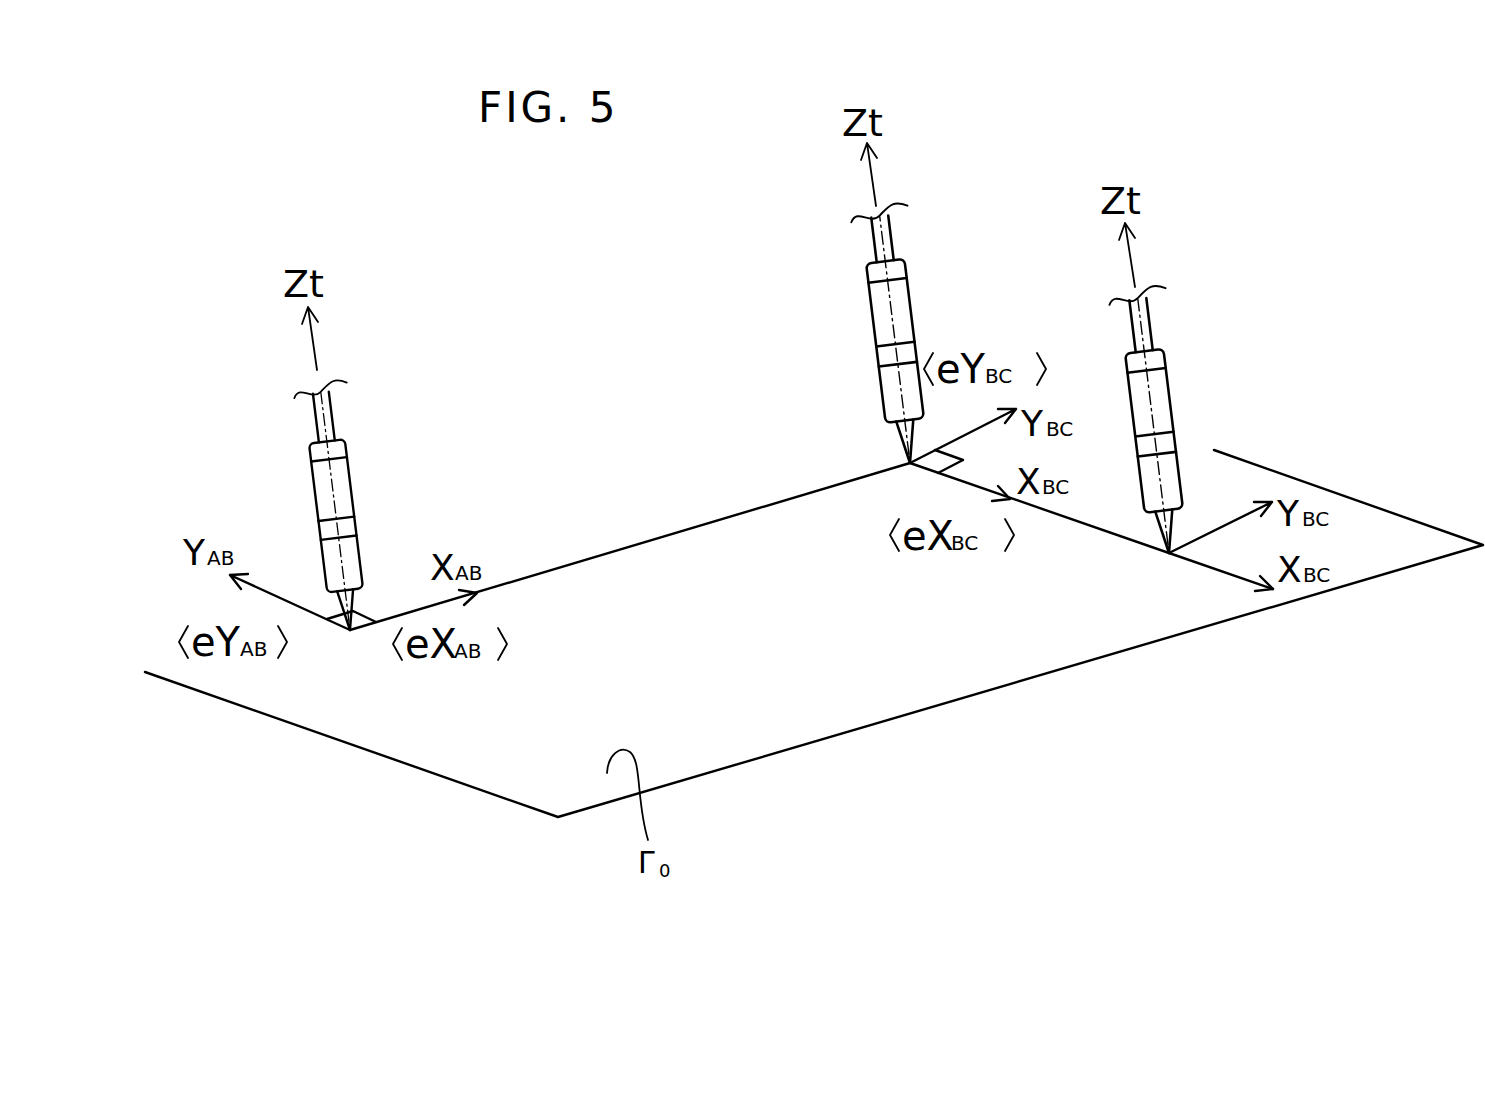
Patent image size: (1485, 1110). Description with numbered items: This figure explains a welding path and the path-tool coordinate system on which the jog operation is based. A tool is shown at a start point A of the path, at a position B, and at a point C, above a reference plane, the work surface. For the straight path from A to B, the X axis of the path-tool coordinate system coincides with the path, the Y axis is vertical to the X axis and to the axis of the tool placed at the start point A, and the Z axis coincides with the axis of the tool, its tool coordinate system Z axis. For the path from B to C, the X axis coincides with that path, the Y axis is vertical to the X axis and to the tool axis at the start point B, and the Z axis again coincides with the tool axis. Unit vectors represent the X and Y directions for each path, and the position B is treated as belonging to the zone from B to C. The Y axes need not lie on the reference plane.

The start point of path A-B A is at (335, 528).
The start point of path B-C B is at (894, 359).
The end point of path B- C is at (1153, 444).